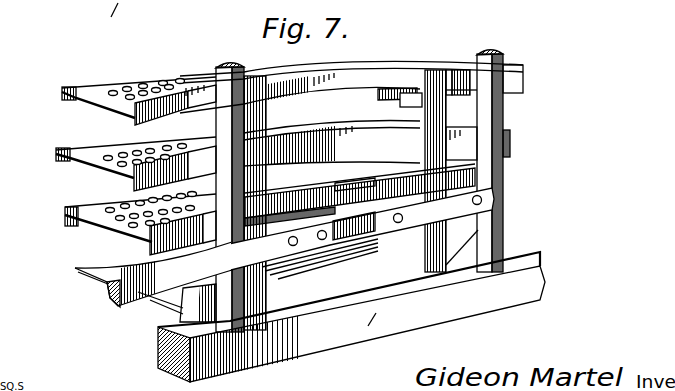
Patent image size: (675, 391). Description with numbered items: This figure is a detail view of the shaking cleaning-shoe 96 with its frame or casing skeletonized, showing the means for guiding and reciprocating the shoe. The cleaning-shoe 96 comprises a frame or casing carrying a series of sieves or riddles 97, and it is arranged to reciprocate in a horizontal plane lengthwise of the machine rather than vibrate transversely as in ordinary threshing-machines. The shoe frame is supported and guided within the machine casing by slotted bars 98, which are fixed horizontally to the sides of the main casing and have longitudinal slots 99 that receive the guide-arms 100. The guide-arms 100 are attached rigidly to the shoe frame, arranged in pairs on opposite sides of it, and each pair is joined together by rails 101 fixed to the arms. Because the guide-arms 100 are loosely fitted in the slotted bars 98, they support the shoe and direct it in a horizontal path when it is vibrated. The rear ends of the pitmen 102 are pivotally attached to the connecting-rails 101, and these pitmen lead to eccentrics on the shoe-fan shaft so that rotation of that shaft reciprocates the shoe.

The cleaning-shoe 96 is at (322, 178).
The sieves or riddles 97 is at (107, 88).
The slotted bars 98 is at (378, 181).
The longitudinal slots 99 is at (257, 210).
The guide-arms 100 is at (283, 197).
The rails 101 is at (460, 207).
The pitmen 102 is at (153, 282).